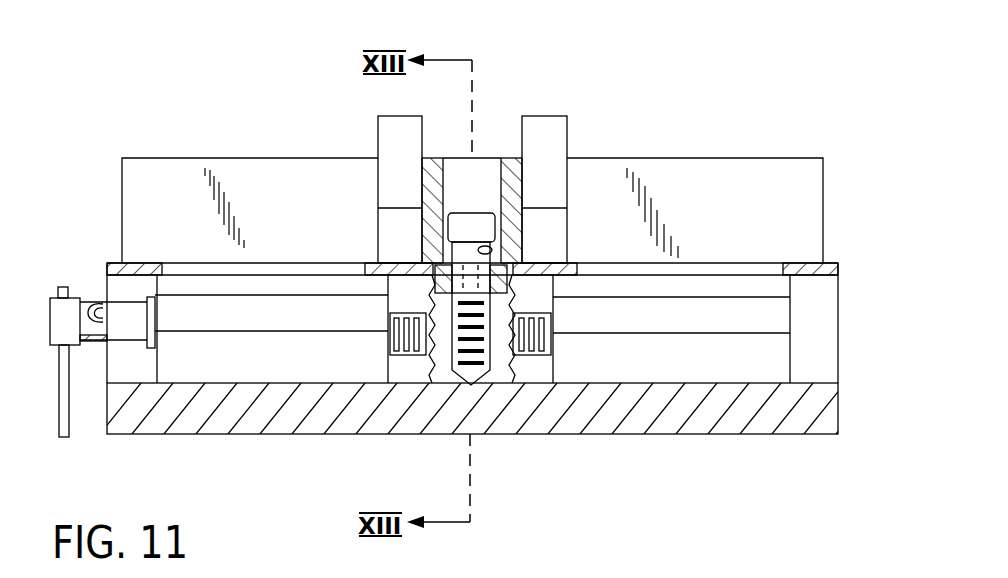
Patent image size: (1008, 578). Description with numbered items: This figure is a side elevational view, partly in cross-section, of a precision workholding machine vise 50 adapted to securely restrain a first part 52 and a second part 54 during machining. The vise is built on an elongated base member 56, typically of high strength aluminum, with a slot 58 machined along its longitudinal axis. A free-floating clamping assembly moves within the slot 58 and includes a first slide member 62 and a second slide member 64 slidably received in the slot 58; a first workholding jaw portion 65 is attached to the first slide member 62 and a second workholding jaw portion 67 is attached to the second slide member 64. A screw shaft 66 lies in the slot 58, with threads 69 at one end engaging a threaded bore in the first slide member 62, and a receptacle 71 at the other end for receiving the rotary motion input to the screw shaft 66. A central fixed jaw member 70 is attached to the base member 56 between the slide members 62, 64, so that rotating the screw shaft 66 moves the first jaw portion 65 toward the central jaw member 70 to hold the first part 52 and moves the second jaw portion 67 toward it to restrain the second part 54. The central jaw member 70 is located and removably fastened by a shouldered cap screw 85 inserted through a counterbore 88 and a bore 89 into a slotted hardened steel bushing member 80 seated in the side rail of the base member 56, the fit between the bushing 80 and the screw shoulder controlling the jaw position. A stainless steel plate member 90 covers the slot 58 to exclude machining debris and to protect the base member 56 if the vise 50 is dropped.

The workholding machine vise 50 is at (798, 447).
The first part 52 is at (413, 177).
The second part 54 is at (560, 177).
The base member 56 is at (693, 422).
The slot 58 is at (418, 373).
The first slide member 62 is at (283, 326).
The second slide member 64 is at (685, 332).
The first workholding jaw portion 65 is at (287, 227).
The screw shaft 66 is at (130, 313).
The second workholding jaw portion 67 is at (722, 221).
The threads 69 is at (513, 373).
The central fixed jaw member 70 is at (510, 167).
The receptacle 71 is at (78, 300).
The second bushing member 80 is at (448, 260).
The shouldered cap screw 85 is at (486, 240).
The counterbore 88 is at (444, 177).
The bore 89 is at (492, 250).
The plate member 90 is at (827, 267).